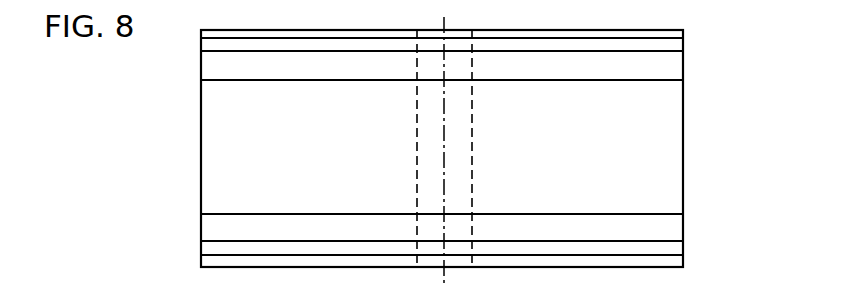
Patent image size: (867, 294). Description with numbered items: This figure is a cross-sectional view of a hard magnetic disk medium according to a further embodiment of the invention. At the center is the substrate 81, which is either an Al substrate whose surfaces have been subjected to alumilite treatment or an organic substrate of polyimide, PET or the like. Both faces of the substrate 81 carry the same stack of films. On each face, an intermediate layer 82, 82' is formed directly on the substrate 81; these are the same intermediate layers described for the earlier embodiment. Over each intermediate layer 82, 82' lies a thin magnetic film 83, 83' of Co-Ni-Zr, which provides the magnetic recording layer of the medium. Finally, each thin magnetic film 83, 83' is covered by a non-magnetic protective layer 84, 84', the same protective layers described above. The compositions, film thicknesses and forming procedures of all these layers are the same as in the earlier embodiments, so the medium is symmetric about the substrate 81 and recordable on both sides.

The substrate 81 is at (670, 165).
The intermediate layer 82 is at (473, 72).
The thin magnetic film 83 is at (473, 51).
The non-magnetic protective layer 84 is at (473, 27).
The intermediate layer 82' is at (477, 222).
The thin magnetic film 83' is at (478, 247).
The non-magnetic protective layer 84' is at (478, 271).